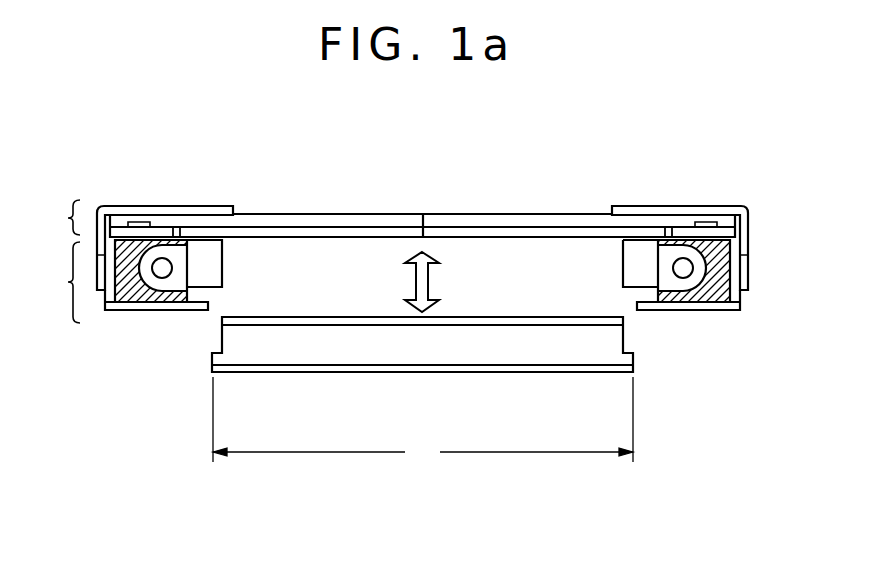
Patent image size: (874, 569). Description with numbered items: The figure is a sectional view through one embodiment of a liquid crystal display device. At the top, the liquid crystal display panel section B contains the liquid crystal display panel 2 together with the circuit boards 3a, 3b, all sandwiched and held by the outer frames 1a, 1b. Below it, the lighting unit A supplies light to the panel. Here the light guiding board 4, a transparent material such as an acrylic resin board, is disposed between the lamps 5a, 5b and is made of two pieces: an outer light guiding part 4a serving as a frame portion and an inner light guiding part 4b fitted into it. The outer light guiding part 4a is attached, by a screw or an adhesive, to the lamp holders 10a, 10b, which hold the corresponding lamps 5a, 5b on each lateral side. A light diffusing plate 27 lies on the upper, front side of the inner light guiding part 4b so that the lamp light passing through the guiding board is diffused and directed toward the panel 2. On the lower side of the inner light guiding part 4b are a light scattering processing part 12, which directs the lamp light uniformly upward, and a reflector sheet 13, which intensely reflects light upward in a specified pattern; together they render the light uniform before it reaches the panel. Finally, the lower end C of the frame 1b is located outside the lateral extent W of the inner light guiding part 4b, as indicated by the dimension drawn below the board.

The frame 1a is at (422, 204).
The frame 1b is at (451, 386).
The liquid crystal display panel 2 is at (422, 178).
The light diffusing plate 27 is at (422, 218).
The circuit board 3a is at (122, 187).
The circuit board 3b is at (730, 198).
The light guiding board 4 is at (460, 317).
The outer light guiding part 4a is at (422, 203).
The inner light guiding part 4b is at (473, 283).
The lamp 5a is at (128, 352).
The lamp 5b is at (741, 248).
The lamp holder 10a is at (141, 313).
The lamp holder 10b is at (712, 271).
The light scattering processing part 12 is at (473, 406).
The reflector sheet 13 is at (422, 368).
The lighting unit A is at (59, 282).
The liquid crystal display panel section B is at (59, 218).
The lower end C is at (675, 336).
The lateral extent W is at (423, 422).